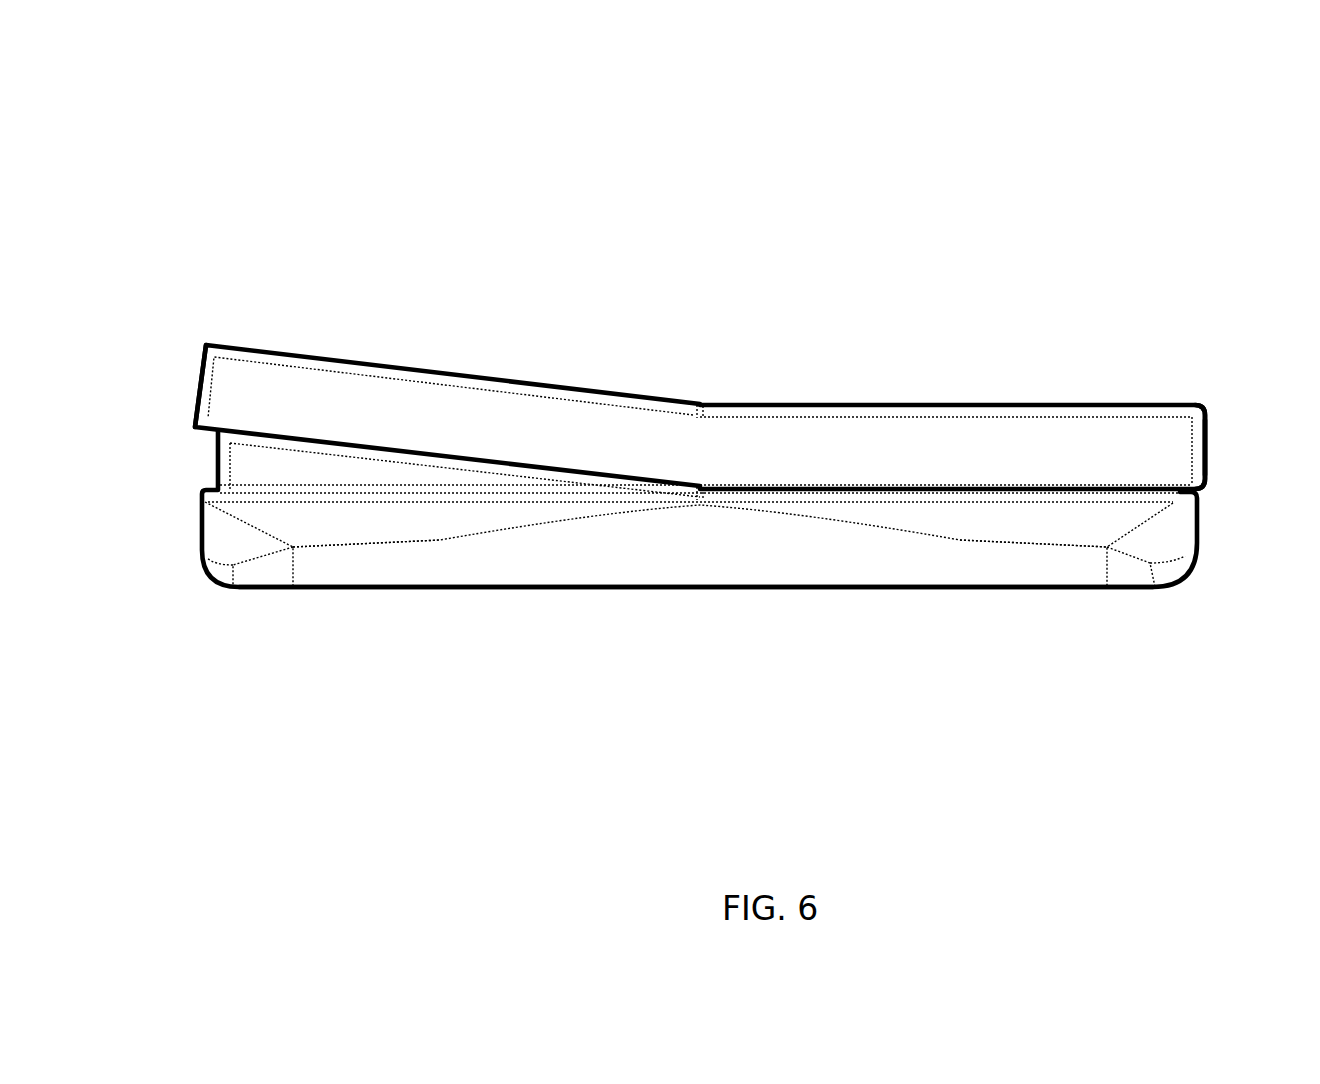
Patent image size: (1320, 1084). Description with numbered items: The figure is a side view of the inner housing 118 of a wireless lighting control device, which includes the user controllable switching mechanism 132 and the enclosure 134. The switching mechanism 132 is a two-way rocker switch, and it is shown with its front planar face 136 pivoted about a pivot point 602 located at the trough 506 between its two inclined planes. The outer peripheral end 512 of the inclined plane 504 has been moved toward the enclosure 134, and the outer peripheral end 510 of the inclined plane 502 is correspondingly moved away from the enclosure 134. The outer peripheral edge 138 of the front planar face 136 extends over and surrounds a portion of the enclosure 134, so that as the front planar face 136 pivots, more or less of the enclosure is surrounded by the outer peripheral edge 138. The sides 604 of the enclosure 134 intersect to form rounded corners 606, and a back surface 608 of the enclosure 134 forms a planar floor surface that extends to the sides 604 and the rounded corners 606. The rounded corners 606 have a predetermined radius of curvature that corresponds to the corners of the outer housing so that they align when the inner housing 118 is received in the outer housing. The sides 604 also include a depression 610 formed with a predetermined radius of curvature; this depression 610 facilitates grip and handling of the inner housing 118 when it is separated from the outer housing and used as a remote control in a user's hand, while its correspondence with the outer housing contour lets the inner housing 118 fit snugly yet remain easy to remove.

The inner housing 118 is at (708, 439).
The user controllable switching mechanism 132 is at (744, 341).
The enclosure 134 is at (708, 607).
The front planar face 136 is at (852, 413).
The outer peripheral edge 138 is at (1210, 437).
The inclined plane 502 is at (447, 346).
The inclined plane 504 is at (997, 354).
The trough 506 is at (703, 388).
The outer peripheral end 510 is at (208, 332).
The outer peripheral end 512 is at (1206, 394).
The pivot point 602 is at (686, 446).
The sides 604 is at (186, 540).
The rounded corners 606 is at (228, 590).
The back surface 608 is at (495, 590).
The depression 610 is at (702, 552).